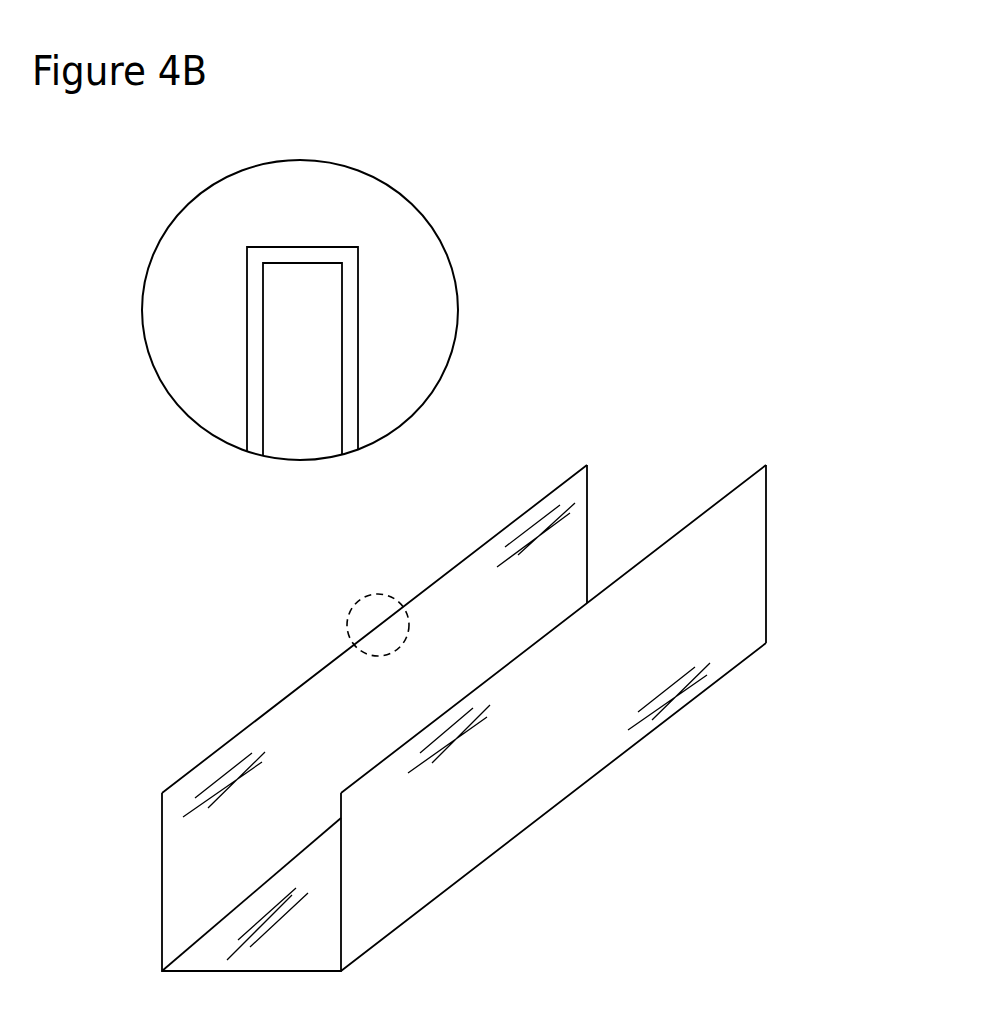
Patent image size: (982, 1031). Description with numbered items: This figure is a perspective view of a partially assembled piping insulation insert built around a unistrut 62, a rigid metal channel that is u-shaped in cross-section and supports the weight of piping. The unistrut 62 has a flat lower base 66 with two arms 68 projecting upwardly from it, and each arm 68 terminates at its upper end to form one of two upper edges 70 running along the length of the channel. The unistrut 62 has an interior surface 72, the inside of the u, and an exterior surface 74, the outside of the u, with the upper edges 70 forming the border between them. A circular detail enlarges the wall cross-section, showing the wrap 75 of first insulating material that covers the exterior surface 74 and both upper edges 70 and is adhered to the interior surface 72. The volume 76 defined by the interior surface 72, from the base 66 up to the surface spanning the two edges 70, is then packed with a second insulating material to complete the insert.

The unistrut 62 is at (299, 372).
The lower base 66 is at (327, 980).
The arms 68 is at (341, 852).
The upper edges 70 is at (590, 477).
The interior surface 72 is at (227, 895).
The exterior surface 74 is at (653, 644).
The coating layer 75 is at (349, 280).
The volume 76 is at (628, 537).